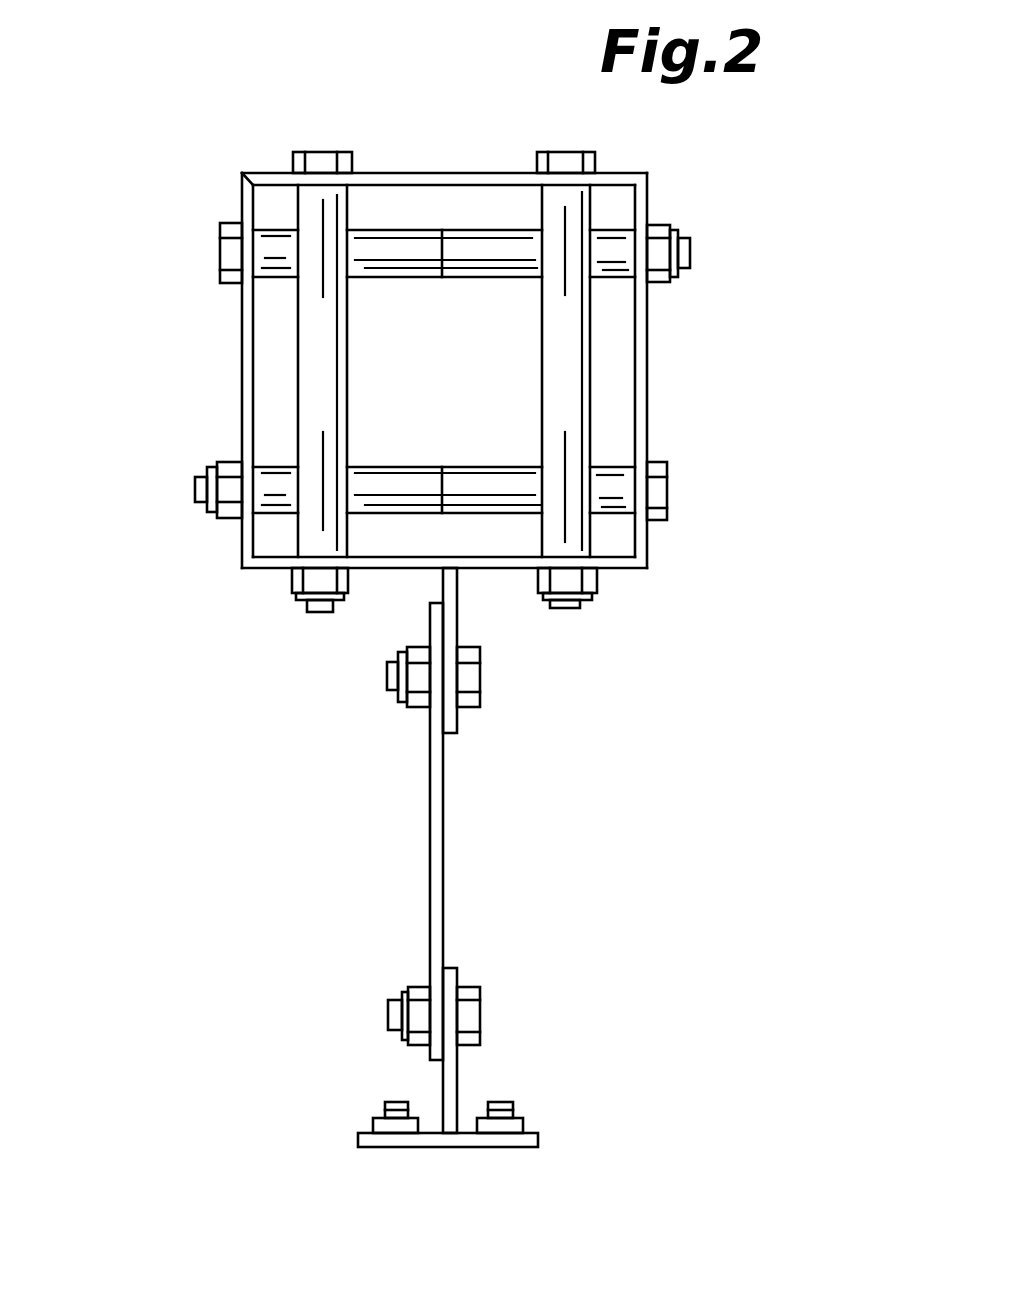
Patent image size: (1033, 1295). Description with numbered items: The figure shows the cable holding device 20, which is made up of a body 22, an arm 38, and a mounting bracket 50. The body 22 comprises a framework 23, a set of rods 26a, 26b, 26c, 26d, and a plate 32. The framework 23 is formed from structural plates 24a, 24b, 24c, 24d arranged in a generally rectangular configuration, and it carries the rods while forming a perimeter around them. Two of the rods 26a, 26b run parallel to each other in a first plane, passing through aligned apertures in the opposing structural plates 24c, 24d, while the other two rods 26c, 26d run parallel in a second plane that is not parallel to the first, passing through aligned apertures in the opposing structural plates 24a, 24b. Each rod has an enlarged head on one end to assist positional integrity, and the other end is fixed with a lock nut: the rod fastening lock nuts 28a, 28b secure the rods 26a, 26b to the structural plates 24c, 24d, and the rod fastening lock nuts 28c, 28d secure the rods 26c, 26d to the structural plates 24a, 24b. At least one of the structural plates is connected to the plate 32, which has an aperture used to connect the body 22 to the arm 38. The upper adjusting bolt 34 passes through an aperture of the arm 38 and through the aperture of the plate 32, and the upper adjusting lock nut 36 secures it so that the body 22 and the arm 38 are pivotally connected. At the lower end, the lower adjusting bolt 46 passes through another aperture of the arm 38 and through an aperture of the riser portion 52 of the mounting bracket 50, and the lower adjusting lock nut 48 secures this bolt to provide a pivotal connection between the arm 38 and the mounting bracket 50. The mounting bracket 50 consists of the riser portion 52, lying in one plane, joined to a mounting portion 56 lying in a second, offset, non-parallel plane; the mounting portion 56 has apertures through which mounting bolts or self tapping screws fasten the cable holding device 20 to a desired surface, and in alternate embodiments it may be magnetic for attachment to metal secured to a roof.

The cable holding device 20 is at (683, 167).
The body 22 is at (250, 175).
The framework 23 is at (277, 180).
The structural plate 24a is at (243, 207).
The structural plate 24b is at (637, 207).
The structural plate 24c is at (385, 175).
The structural plate 24d is at (267, 563).
The rod 26a is at (325, 370).
The rod 26b is at (562, 370).
The rod 26c is at (445, 240).
The rod 26d is at (615, 490).
The rod fastening lock nut 28a is at (315, 582).
The rod fastening lock nut 28b is at (562, 583).
The rod fastening lock nut 28c is at (660, 258).
The rod fastening lock nut 28d is at (225, 500).
The plate 32 is at (458, 615).
The upper adjusting bolt 34 is at (480, 678).
The upper adjusting lock nut 36 is at (415, 676).
The arm 38 is at (425, 882).
The lower adjusting bolt 46 is at (480, 1012).
The lower adjusting lock nut 48 is at (417, 1015).
The mounting bracket 50 is at (540, 1138).
The riser portion 52 is at (457, 1085).
The mounting portion 56 is at (373, 1140).